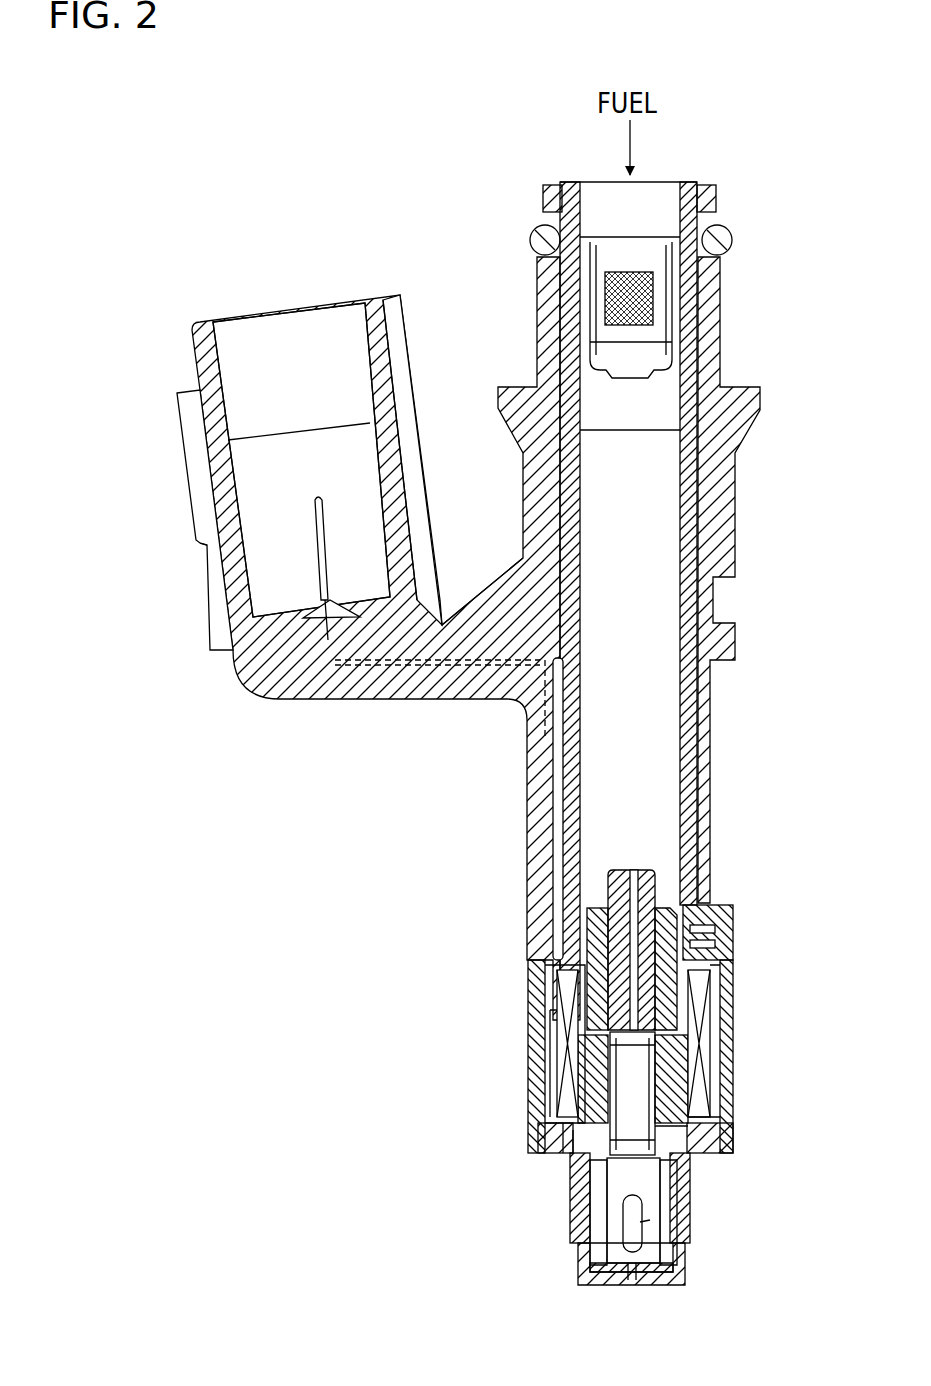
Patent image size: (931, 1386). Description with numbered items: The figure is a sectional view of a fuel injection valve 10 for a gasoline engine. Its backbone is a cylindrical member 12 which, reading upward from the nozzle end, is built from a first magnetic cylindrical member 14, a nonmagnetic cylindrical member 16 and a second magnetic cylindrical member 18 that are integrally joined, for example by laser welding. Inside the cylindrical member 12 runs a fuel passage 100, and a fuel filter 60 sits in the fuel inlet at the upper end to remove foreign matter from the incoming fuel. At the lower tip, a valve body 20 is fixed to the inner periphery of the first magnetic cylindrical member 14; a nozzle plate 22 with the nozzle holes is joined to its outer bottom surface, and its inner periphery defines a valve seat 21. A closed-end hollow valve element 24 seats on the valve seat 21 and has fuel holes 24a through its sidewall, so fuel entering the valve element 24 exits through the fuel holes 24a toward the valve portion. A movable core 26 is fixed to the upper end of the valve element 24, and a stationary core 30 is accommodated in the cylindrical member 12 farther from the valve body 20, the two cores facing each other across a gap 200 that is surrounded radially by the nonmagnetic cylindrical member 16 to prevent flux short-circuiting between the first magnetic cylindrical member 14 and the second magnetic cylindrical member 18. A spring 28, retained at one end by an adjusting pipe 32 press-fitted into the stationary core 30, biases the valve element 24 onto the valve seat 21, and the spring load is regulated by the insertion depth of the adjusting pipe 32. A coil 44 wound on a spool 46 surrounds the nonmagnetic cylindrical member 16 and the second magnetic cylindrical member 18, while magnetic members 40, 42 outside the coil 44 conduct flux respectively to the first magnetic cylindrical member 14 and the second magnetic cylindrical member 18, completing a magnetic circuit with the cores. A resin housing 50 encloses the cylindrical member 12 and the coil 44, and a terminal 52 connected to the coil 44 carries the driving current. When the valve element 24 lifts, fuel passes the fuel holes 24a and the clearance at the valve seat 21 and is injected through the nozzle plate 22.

The fuel injection valve 10 is at (702, 160).
The cylindrical member 12 is at (710, 690).
The first magnetic cylindrical member 14 is at (690, 1170).
The nonmagnetic cylindrical member 16 is at (690, 1100).
The second magnetic cylindrical member 18 is at (700, 525).
The valve body 20 is at (580, 1250).
The valve seat 21 is at (685, 1270).
The nozzle plate 22 is at (588, 1285).
The valve element 24 is at (580, 1183).
The fuel holes 24a is at (688, 1226).
The movable core 26 is at (572, 1135).
The spring 28 is at (655, 1075).
The stationary core 30 is at (665, 905).
The adjusting pipe 32 is at (642, 868).
The magnetic member 40 is at (728, 1150).
The magnetic member 42 is at (720, 912).
The coil 44 is at (560, 1048).
The spool 46 is at (555, 1092).
The resin housing 50 is at (350, 700).
The terminal 52 is at (318, 497).
The fuel filter 60 is at (655, 290).
The fuel passage 100 is at (640, 600).
The gap 200 is at (668, 1128).